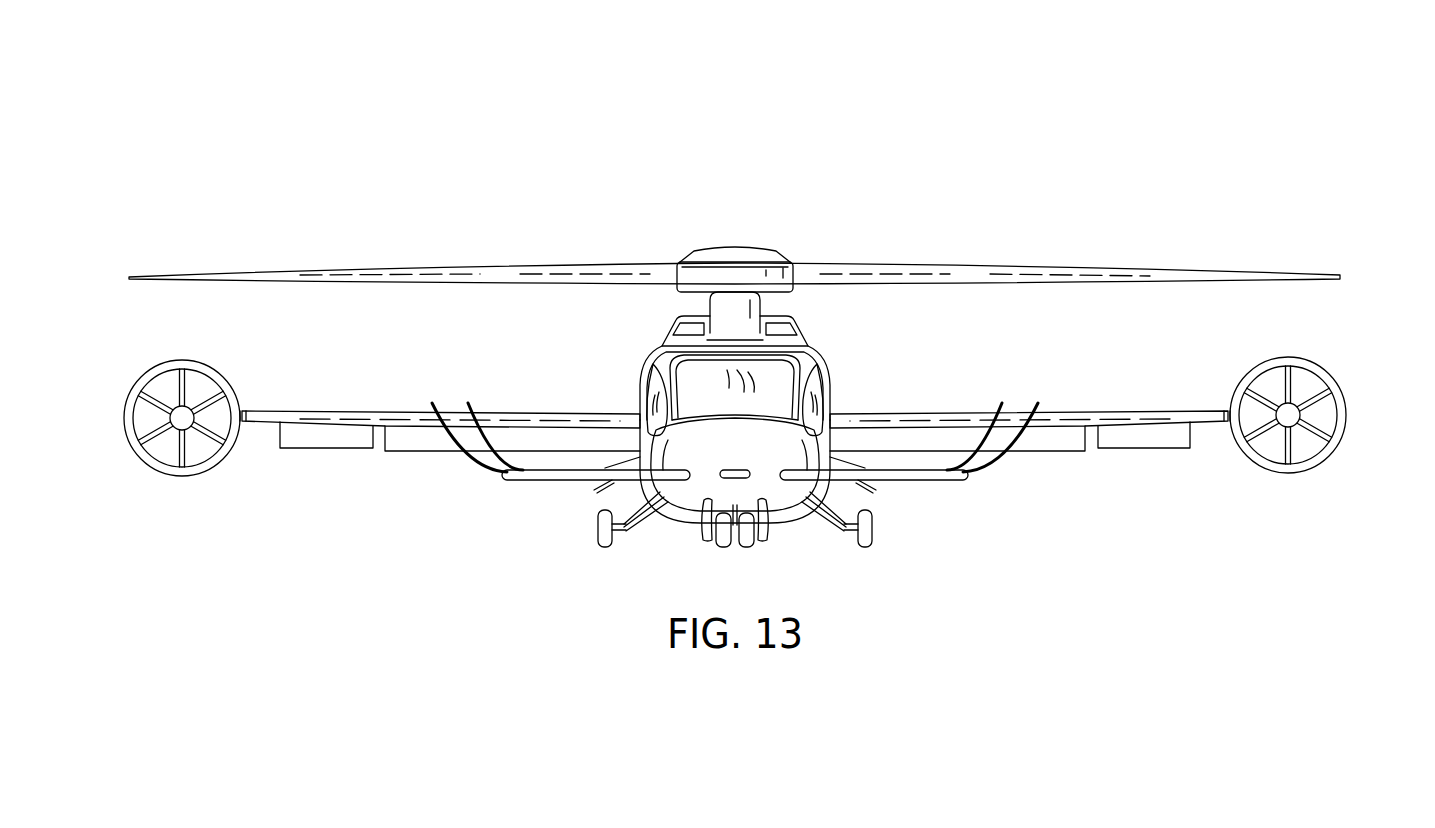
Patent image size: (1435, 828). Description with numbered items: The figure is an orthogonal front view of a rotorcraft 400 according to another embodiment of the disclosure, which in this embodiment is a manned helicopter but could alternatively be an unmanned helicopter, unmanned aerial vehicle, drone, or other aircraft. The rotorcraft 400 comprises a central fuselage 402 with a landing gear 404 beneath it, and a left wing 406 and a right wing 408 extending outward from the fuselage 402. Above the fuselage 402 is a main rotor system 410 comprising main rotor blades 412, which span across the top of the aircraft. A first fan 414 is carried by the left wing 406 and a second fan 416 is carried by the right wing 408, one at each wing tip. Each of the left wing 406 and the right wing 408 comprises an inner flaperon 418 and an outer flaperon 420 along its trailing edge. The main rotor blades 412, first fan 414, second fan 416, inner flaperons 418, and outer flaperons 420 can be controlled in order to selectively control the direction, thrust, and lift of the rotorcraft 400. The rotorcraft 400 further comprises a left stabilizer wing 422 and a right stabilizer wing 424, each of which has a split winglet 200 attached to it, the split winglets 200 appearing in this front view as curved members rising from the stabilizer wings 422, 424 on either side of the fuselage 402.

The rotorcraft 400 is at (1078, 168).
The fuselage 402 is at (788, 525).
The landing gear 404 is at (606, 551).
The left wing 406 is at (1118, 410).
The right wing 408 is at (352, 411).
The main rotor system 410 is at (766, 234).
The main rotor blades 412 is at (410, 267).
The first fan 414 is at (1347, 404).
The second fan 416 is at (123, 411).
The inner flaperon 418 is at (421, 452).
The outer flaperon 420 is at (327, 450).
The left stabilizer wing 422 is at (893, 481).
The right stabilizer wing 424 is at (578, 483).
The split winglet 200 is at (494, 498).